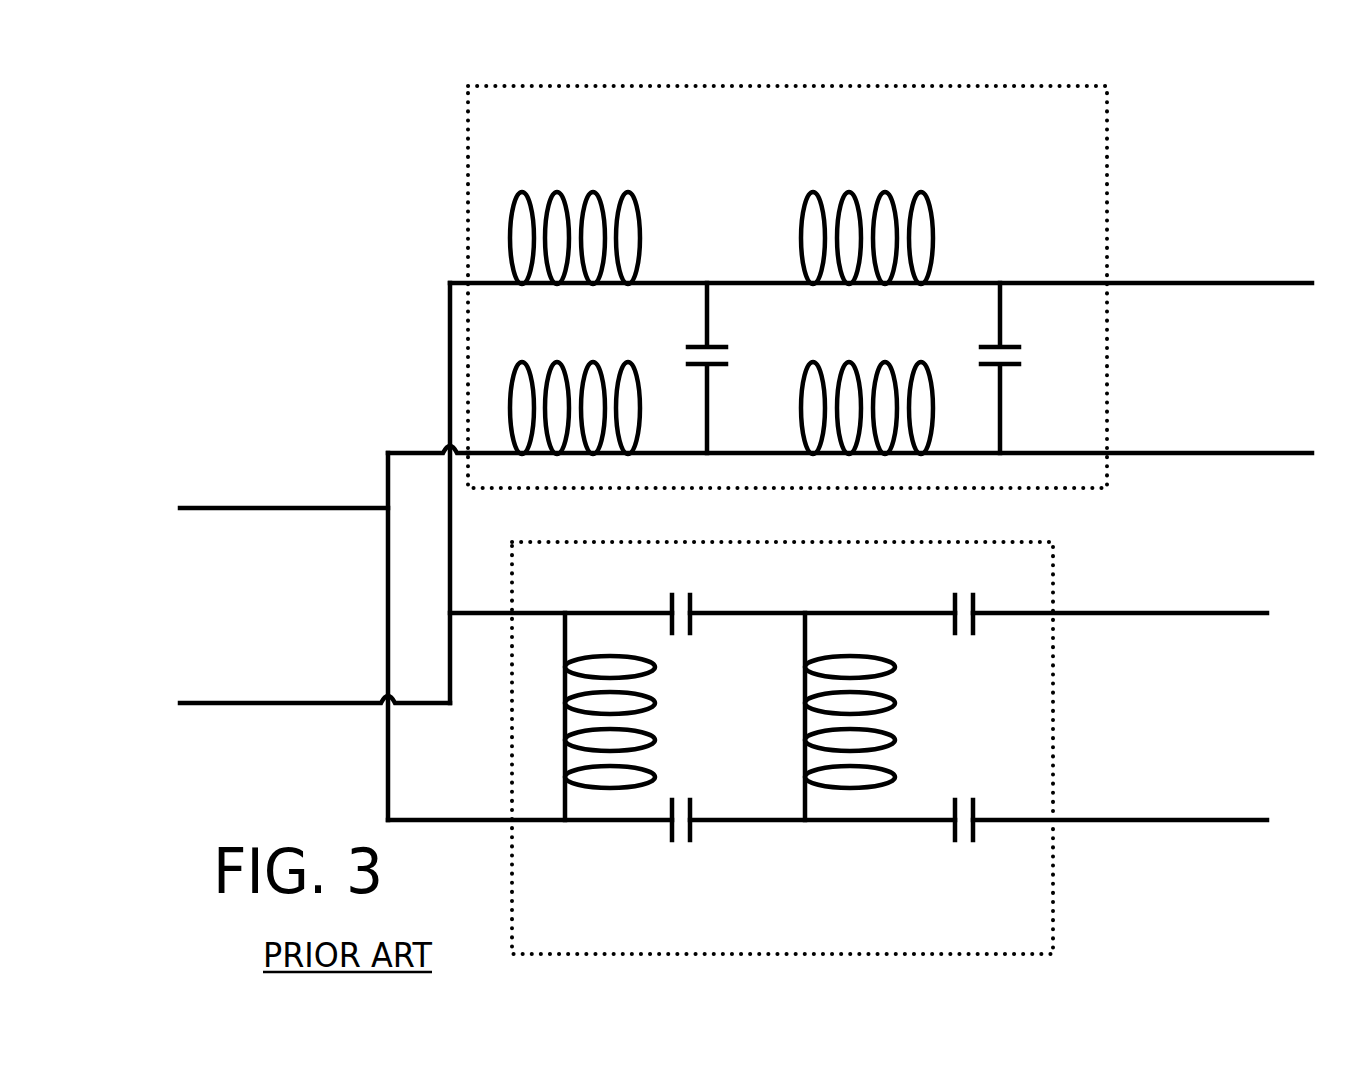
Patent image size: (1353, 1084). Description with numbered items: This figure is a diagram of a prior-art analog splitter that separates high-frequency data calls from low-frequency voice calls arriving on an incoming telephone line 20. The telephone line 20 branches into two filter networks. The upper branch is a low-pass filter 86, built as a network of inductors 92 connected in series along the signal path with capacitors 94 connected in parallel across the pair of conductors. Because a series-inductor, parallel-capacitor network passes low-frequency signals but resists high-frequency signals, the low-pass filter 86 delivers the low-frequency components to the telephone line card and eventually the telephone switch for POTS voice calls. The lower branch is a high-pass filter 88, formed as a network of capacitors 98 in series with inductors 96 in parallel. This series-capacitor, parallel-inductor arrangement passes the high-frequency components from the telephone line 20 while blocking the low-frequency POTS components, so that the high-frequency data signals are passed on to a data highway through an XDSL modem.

The telephone line 20 is at (324, 551).
The low-pass filter 86 is at (1087, 138).
The high-pass filter 88 is at (563, 935).
The inductors 92 is at (594, 174).
The capacitors 94 is at (725, 364).
The inductors 96 is at (680, 707).
The capacitors 98 is at (690, 628).